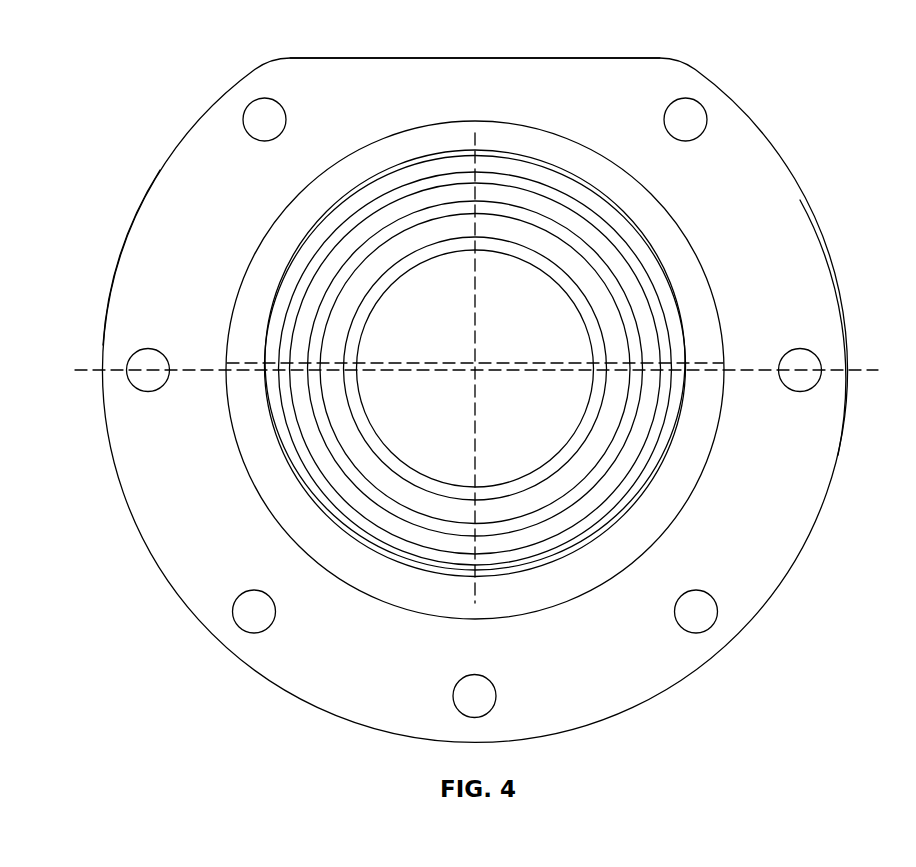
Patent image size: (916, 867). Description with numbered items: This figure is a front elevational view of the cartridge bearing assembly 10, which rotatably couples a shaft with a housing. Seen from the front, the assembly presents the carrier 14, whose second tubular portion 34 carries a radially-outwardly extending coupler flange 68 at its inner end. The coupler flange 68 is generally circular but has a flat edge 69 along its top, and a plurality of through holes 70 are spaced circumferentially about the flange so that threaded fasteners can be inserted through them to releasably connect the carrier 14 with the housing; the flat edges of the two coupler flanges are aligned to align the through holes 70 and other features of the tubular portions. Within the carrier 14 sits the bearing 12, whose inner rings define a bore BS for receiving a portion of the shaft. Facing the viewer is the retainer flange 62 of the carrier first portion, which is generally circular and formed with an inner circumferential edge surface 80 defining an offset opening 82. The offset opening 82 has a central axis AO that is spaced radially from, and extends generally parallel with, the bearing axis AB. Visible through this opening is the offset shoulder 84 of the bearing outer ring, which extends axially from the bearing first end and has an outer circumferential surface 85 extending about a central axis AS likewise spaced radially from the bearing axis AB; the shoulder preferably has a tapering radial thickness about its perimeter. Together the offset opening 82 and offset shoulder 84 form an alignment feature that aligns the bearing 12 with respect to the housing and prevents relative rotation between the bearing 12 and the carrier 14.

The cartridge bearing assembly 10 is at (205, 80).
The bearing 12 is at (565, 224).
The carrier 14 is at (140, 175).
The second tubular portion 34 is at (101, 345).
The retainer flange 62 is at (655, 457).
The coupler flange 68 is at (837, 452).
The flat edge 69 is at (580, 58).
The through holes 70 is at (705, 129).
The inner circumferential edge surface 80 is at (572, 538).
The offset opening 82 is at (645, 486).
The offset shoulder 84 is at (645, 287).
The outer circumferential surface 85 is at (642, 262).
The bearing axis AB is at (475, 363).
The offset opening central axis AO is at (475, 370).
The offset shoulder central axis AS is at (527, 368).
The bore BS is at (410, 453).